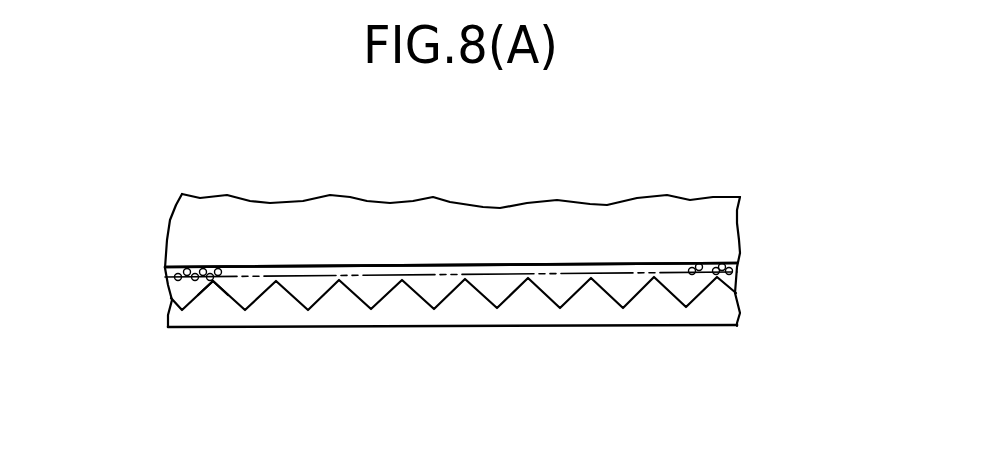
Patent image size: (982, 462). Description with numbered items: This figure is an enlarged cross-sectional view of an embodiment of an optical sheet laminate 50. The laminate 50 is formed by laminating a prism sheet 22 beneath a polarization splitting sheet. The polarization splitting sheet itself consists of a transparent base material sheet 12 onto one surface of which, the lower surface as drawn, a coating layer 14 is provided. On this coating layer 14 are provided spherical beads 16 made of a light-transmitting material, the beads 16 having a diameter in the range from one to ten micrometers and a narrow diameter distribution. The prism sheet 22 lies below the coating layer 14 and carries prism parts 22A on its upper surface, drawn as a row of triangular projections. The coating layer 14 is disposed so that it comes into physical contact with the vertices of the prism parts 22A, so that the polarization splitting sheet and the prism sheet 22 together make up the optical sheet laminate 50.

The transparent base material sheet 12 is at (720, 228).
The coating layer 14 is at (302, 268).
The spherical beads 16 is at (732, 270).
The prism sheet 22 is at (720, 307).
The prism parts 22A is at (213, 283).
The optical sheet laminate 50 is at (822, 207).